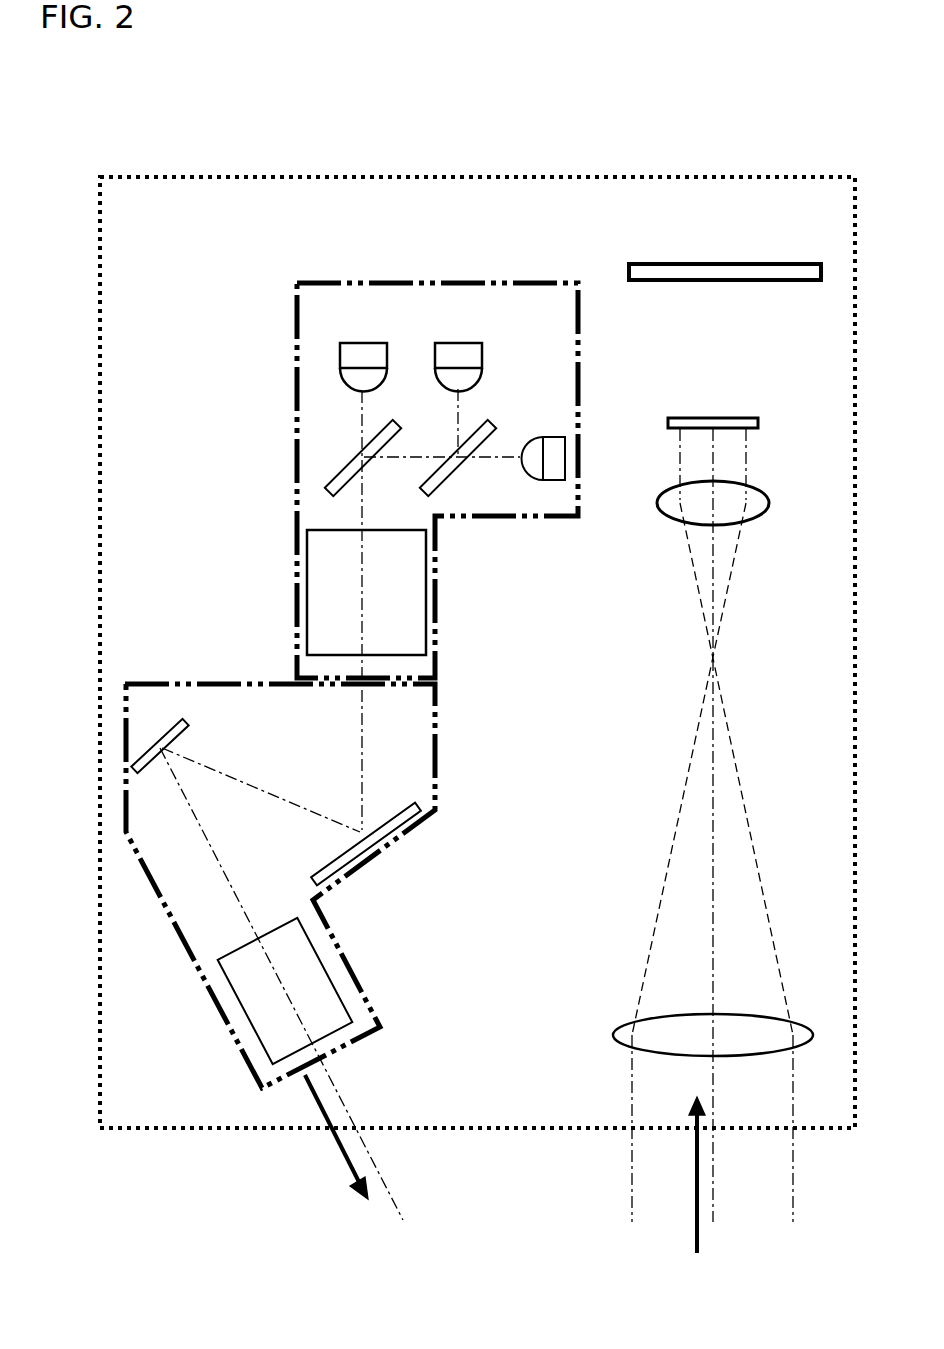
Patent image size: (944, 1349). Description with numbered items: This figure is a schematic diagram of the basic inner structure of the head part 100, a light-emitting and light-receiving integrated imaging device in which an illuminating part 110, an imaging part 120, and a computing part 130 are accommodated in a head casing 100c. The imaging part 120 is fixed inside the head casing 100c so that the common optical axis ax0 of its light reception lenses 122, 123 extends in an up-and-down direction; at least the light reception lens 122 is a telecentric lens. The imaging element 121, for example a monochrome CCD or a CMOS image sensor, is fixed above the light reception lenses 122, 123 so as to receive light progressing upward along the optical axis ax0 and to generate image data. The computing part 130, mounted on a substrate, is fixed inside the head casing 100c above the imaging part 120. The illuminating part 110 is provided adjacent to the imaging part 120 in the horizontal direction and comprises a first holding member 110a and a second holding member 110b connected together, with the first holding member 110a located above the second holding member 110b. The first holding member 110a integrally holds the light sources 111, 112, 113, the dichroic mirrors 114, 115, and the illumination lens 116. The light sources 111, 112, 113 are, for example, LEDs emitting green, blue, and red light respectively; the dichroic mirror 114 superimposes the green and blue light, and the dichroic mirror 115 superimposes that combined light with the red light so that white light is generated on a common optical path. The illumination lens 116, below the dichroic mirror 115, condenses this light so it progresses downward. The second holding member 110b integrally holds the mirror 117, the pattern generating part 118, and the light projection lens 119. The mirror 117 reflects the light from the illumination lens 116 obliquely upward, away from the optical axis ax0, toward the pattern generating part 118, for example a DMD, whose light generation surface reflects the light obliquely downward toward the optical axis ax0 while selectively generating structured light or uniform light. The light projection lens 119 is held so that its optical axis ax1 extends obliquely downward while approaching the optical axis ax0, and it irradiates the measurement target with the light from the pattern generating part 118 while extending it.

The head part 100 is at (220, 115).
The head casing 100c is at (757, 176).
The illuminating part 110 is at (589, 260).
The first holding member 110a is at (295, 333).
The second holding member 110b is at (437, 732).
The light source 111 is at (555, 480).
The light source 112 is at (458, 343).
The light source 113 is at (363, 343).
The dichroic mirror 114 is at (488, 424).
The dichroic mirror 115 is at (385, 430).
The illumination lens 116 is at (295, 560).
The mirror 117 is at (393, 830).
The pattern generating part 118 is at (182, 722).
The light projection lens 119 is at (345, 1007).
The imaging part 120 is at (667, 389).
The imaging element 121 is at (713, 415).
The light reception lens 122 is at (625, 1022).
The light reception lens 123 is at (665, 512).
The computing part 130 is at (757, 260).
The optical axis ax0 is at (713, 1192).
The optical axis ax1 is at (373, 1165).